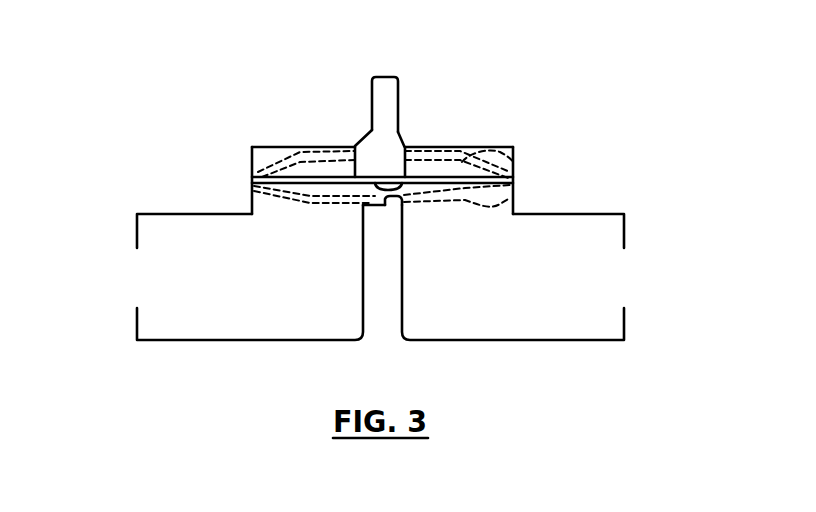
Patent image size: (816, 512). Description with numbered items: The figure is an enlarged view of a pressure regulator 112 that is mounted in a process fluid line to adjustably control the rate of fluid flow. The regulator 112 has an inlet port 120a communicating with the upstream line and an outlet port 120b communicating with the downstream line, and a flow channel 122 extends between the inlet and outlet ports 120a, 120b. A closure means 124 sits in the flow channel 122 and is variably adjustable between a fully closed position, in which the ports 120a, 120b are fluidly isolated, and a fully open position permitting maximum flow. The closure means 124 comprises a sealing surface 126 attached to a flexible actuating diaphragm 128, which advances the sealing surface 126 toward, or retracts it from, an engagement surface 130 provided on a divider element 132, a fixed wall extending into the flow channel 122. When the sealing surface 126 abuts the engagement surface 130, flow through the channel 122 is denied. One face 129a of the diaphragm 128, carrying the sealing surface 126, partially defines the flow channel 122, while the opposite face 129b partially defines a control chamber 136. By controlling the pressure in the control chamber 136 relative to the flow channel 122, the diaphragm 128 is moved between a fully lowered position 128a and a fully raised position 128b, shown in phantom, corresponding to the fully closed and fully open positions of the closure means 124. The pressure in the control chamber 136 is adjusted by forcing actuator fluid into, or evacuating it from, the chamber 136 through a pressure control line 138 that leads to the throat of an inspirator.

The pressure regulator 112 is at (585, 158).
The inlet port 120a is at (140, 272).
The outlet port 120b is at (620, 278).
The flow channel 122 is at (293, 297).
The closure means 124 is at (460, 162).
The sealing surface 126 is at (403, 147).
The flexible actuating diaphragm 128 is at (302, 172).
The fully lowered position 128a is at (500, 197).
The fully raised position 128b is at (513, 162).
The face of the diaphragm 129a is at (323, 192).
The opposite face of the diaphragm 129b is at (345, 173).
The engagement surface 130 is at (404, 207).
The divider element 132 is at (402, 290).
The control chamber 136 is at (272, 165).
The pressure control line 138 is at (400, 84).